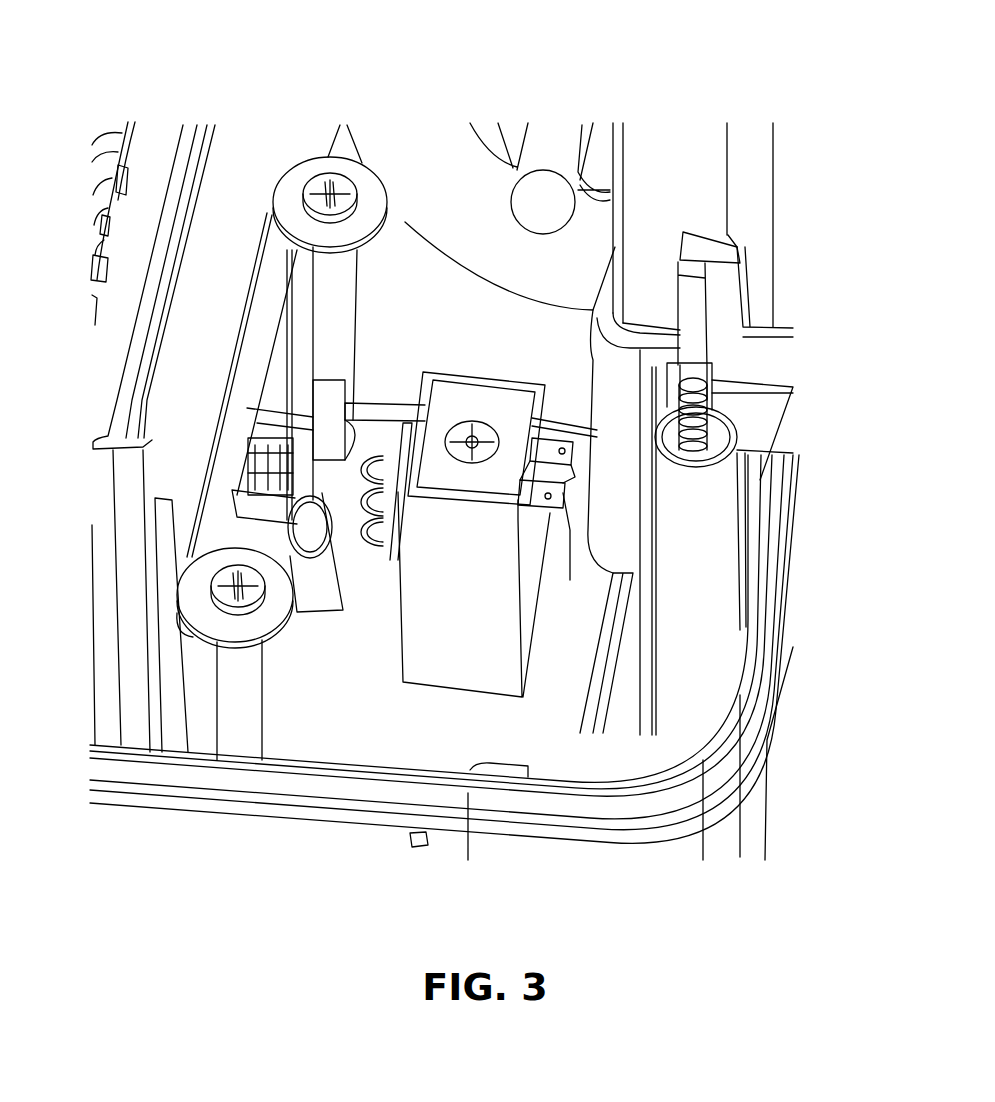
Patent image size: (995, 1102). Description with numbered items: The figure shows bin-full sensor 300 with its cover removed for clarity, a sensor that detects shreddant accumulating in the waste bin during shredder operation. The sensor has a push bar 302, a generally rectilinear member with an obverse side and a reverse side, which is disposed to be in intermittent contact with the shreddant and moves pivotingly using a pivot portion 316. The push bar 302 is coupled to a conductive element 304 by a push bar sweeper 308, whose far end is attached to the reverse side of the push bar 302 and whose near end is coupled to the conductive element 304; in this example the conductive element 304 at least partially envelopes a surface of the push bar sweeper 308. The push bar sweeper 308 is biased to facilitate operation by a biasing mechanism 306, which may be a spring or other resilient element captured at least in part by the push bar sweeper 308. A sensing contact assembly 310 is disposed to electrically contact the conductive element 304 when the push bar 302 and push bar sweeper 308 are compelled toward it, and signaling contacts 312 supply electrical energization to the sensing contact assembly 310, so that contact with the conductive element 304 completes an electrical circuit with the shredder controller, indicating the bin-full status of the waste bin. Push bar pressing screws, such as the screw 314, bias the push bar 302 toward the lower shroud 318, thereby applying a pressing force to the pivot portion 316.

The bin-full sensor 300 is at (413, 110).
The push bar 302 is at (237, 357).
The conductive element 304 is at (335, 460).
The biasing mechanism 306 is at (272, 475).
The push bar sweeper 308 is at (307, 528).
The sensing contact assembly 310 is at (357, 541).
The signaling contacts 312 is at (575, 477).
The screw 314 is at (232, 623).
The pivot portion 316 is at (188, 632).
The lower shroud 318 is at (598, 817).